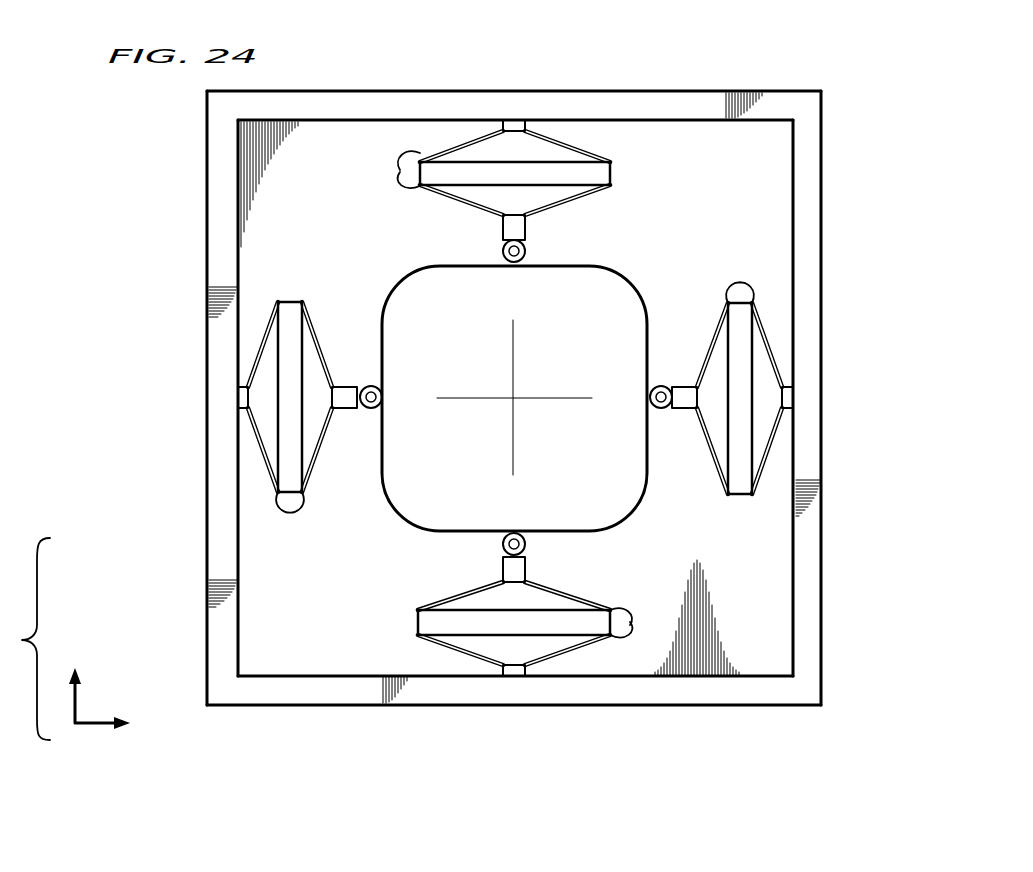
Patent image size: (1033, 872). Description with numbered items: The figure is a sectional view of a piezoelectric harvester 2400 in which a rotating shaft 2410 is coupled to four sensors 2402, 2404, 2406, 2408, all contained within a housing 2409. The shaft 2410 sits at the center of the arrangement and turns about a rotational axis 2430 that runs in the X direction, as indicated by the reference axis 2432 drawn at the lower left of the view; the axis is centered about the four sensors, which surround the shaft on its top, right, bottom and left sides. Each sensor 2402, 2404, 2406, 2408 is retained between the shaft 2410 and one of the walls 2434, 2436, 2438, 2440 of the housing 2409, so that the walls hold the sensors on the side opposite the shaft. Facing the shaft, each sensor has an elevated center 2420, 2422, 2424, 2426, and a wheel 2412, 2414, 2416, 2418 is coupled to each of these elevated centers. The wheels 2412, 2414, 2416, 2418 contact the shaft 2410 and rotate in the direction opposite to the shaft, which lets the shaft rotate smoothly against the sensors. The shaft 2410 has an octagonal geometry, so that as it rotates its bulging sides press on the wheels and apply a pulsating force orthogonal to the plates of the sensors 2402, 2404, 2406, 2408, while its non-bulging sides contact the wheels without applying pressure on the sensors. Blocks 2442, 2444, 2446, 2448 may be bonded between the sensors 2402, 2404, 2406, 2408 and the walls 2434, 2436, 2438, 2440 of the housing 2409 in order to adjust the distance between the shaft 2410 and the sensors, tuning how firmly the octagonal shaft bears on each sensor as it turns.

The harvester 2400 is at (150, 323).
The sensor 2402 is at (552, 153).
The sensor 2404 is at (775, 427).
The sensor 2406 is at (480, 644).
The sensor 2408 is at (257, 370).
The housing 2409 is at (516, 388).
The rotating shaft 2410 is at (390, 400).
The wheel 2412 is at (500, 250).
The wheel 2414 is at (663, 386).
The wheel 2416 is at (528, 545).
The wheel 2418 is at (368, 386).
The elevated center 2420 is at (527, 220).
The elevated center 2422 is at (690, 410).
The elevated center 2424 is at (502, 575).
The elevated center 2426 is at (338, 410).
The rotational axis 2430 is at (513, 398).
The reference axis 2432 is at (90, 712).
The wall 2434 is at (378, 103).
The wall 2436 is at (807, 225).
The wall 2438 is at (713, 692).
The wall 2440 is at (217, 160).
The block 2442 is at (522, 126).
The block 2444 is at (789, 410).
The block 2446 is at (503, 668).
The block 2448 is at (240, 382).